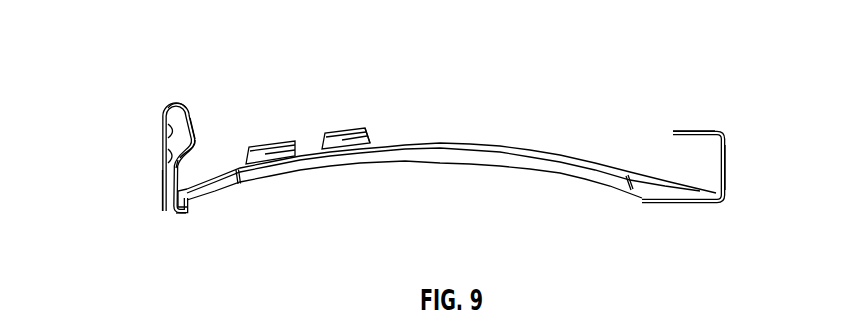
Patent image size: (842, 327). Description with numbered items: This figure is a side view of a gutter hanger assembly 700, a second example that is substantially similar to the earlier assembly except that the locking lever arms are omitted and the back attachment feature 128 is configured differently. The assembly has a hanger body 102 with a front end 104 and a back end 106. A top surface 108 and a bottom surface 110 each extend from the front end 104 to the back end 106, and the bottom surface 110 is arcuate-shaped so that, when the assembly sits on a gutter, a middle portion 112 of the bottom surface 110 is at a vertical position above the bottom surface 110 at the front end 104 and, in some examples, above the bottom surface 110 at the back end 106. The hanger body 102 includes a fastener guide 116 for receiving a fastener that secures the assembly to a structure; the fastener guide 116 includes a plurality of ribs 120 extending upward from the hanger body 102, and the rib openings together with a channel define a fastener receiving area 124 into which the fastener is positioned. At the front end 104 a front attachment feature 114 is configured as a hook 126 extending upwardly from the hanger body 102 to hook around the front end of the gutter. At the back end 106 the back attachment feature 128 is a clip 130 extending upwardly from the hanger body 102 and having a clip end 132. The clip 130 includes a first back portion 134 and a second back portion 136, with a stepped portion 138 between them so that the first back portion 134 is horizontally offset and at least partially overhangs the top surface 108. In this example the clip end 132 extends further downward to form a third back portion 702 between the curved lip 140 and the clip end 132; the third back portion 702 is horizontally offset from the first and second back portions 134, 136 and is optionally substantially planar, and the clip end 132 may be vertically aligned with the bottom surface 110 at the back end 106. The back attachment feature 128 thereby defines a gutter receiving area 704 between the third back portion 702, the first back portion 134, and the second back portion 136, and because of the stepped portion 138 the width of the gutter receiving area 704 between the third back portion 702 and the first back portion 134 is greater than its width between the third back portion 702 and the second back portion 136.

The gutter hanger assembly 700 is at (684, 76).
The hanger body 102 is at (500, 144).
The front end 104 is at (695, 204).
The back end 106 is at (181, 213).
The top surface 108 is at (582, 159).
The bottom surface 110 is at (447, 166).
The middle portion 112 is at (515, 170).
The front attachment feature 114 is at (720, 175).
The fastener guide 116 is at (390, 93).
The rib 120 is at (278, 141).
The fastener receiving area 124 is at (378, 136).
The hook 126 is at (698, 129).
The back attachment feature 128 is at (189, 102).
The clip 130 is at (197, 118).
The clip end 132 is at (165, 212).
The first back portion 134 is at (198, 140).
The second back portion 136 is at (188, 196).
The stepped portion 138 is at (191, 157).
The curved lip 140 is at (178, 101).
The third back portion 702 is at (168, 157).
The gutter receiving area 704 is at (170, 133).